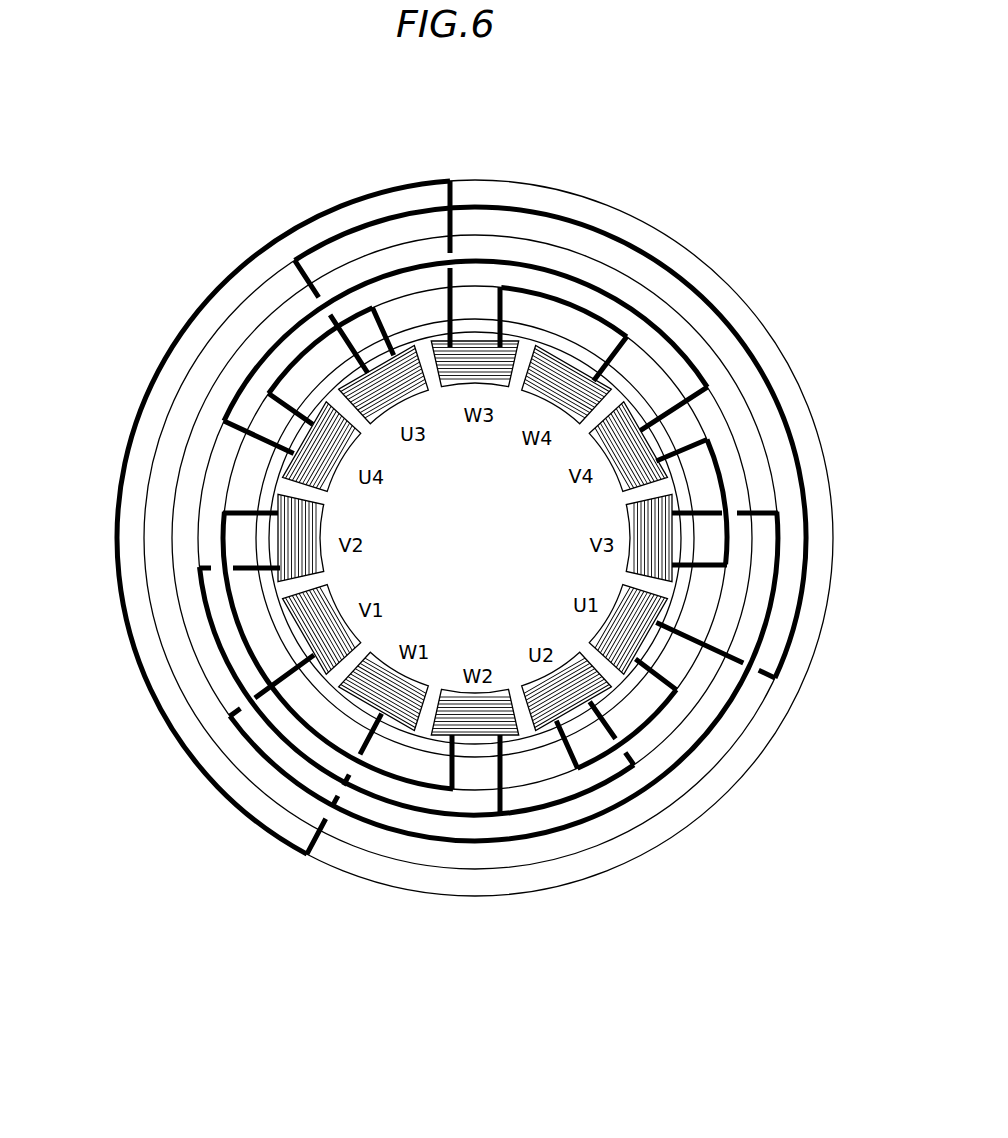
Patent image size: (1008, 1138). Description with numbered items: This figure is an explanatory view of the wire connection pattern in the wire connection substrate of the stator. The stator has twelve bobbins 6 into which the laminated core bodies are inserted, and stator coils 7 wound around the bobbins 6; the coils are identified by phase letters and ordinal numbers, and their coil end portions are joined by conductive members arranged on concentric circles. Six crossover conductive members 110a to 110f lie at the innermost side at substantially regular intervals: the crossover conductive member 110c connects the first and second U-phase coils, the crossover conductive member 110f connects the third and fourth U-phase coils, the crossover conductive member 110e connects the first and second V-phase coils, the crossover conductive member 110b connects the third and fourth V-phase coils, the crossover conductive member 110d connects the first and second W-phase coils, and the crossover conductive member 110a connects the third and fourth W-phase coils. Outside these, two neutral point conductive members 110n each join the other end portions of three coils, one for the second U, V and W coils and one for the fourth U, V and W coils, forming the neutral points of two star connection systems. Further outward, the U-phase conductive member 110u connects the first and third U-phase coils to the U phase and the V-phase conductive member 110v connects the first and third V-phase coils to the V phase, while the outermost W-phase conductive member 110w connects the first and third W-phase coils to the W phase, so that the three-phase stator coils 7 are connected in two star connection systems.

The crossover conductive member 110a is at (620, 292).
The crossover conductive member 110b is at (727, 482).
The crossover conductive member 110c is at (663, 717).
The crossover conductive member 110d is at (415, 790).
The crossover conductive member 110e is at (222, 546).
The crossover conductive member 110f is at (287, 360).
The U-phase conductive member 110u is at (766, 372).
The V-phase conductive member 110v is at (578, 838).
The W-phase conductive member 110w is at (126, 455).
The neutral point conductive member 110n is at (683, 350).
The bobbin 6 is at (672, 566).
The stator coil 7 is at (650, 512).